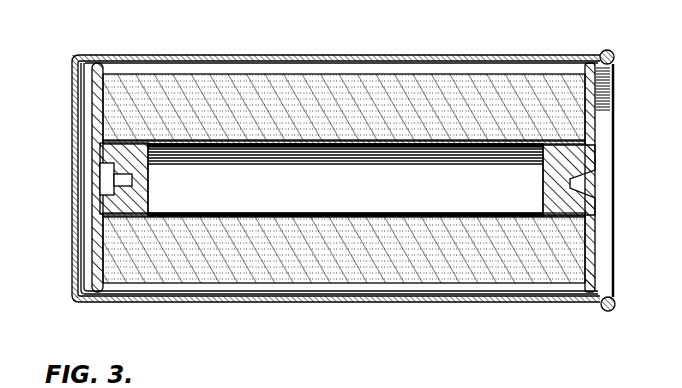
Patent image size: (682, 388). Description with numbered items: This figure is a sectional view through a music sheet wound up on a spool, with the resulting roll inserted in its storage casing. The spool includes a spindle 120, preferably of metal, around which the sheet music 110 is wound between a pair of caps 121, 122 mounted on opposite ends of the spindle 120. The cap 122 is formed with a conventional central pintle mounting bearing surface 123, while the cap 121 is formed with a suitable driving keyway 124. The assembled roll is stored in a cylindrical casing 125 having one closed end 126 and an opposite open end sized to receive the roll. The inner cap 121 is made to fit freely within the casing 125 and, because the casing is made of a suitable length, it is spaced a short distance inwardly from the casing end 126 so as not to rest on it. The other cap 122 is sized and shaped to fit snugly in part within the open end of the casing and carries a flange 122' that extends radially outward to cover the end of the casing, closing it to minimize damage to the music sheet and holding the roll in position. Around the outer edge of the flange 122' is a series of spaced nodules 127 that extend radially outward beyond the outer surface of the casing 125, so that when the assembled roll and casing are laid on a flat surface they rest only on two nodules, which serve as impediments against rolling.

The sheet music 110 is at (256, 77).
The spindle 120 is at (303, 148).
The cap 121 is at (104, 106).
The cap 122 is at (627, 180).
The flange 122' is at (629, 284).
The central pintle mounting bearing surface 123 is at (583, 182).
The driving keyway 124 is at (122, 176).
The cylindrical casing 125 is at (284, 303).
The closed end 126 is at (82, 266).
The nodules 127 is at (614, 311).